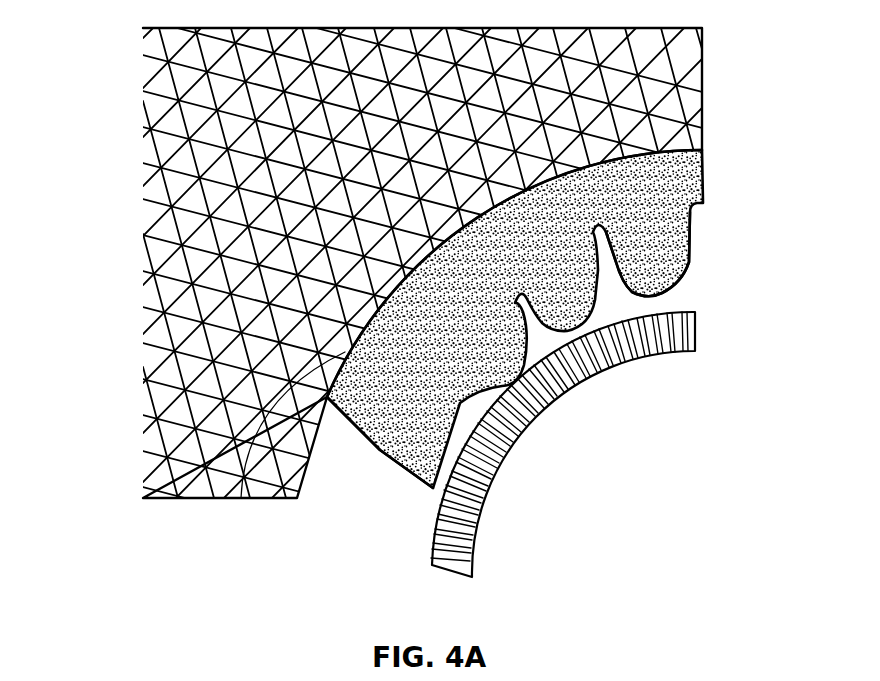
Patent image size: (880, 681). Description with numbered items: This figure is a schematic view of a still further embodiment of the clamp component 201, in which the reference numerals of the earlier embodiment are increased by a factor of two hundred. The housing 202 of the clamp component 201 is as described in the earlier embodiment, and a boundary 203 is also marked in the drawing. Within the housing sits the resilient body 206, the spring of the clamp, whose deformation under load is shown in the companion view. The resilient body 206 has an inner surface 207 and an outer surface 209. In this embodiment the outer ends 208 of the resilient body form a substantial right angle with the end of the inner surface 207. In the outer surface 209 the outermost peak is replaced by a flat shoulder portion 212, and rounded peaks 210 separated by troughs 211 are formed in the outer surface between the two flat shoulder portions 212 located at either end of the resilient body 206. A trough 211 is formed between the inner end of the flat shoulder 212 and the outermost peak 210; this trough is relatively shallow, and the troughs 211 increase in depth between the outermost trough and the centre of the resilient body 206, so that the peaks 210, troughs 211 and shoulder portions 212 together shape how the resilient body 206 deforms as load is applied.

The clamp component 201 is at (90, 100).
The housing 202 is at (663, 70).
The interface boundary 203 is at (628, 148).
The resilient body 206 is at (703, 177).
The inner surface 207 is at (240, 476).
The outer ends 208 is at (383, 456).
The outer surface 209 is at (692, 247).
The rounded peaks 210 is at (656, 296).
The troughs 211 is at (605, 278).
The flat shoulder portion 212 is at (470, 452).